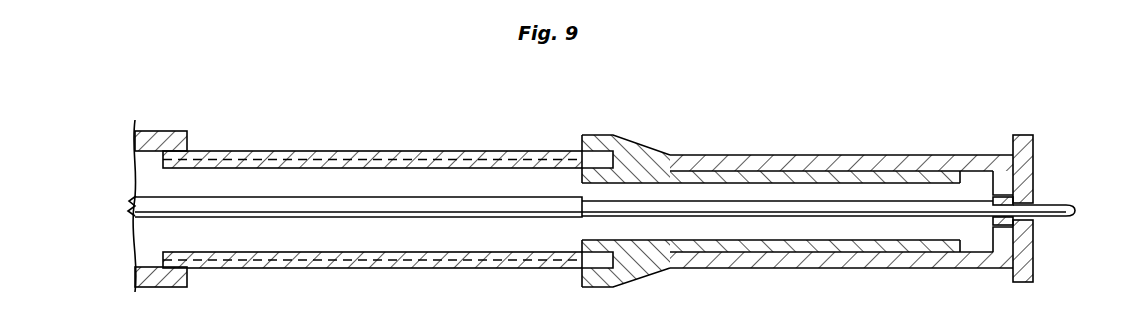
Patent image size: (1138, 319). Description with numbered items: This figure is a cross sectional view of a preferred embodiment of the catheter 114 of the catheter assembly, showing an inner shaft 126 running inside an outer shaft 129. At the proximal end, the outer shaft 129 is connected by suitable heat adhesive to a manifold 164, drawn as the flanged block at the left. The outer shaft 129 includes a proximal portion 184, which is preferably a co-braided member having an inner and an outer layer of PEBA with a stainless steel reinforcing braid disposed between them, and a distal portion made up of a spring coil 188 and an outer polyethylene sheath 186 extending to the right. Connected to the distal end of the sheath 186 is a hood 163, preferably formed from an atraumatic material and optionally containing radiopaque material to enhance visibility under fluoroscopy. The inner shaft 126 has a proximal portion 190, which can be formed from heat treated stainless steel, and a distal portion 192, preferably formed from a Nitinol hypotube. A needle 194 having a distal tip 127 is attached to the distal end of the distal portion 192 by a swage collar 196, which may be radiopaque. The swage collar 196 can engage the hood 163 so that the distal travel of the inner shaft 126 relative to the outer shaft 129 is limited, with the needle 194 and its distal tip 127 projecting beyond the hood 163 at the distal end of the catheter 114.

The catheter 114 is at (455, 124).
The inner shaft 126 is at (505, 216).
The distal tip 127 is at (1062, 200).
The outer shaft 129 is at (470, 148).
The hood 163 is at (1030, 136).
The manifold 164 is at (168, 128).
The proximal portion 184 is at (316, 150).
The outer polyethylene sheath 186 is at (743, 156).
The spring coil 188 is at (677, 157).
The proximal portion 190 is at (362, 203).
The distal portion 192 is at (754, 212).
The needle 194 is at (1045, 220).
The swage collar 196 is at (1006, 219).